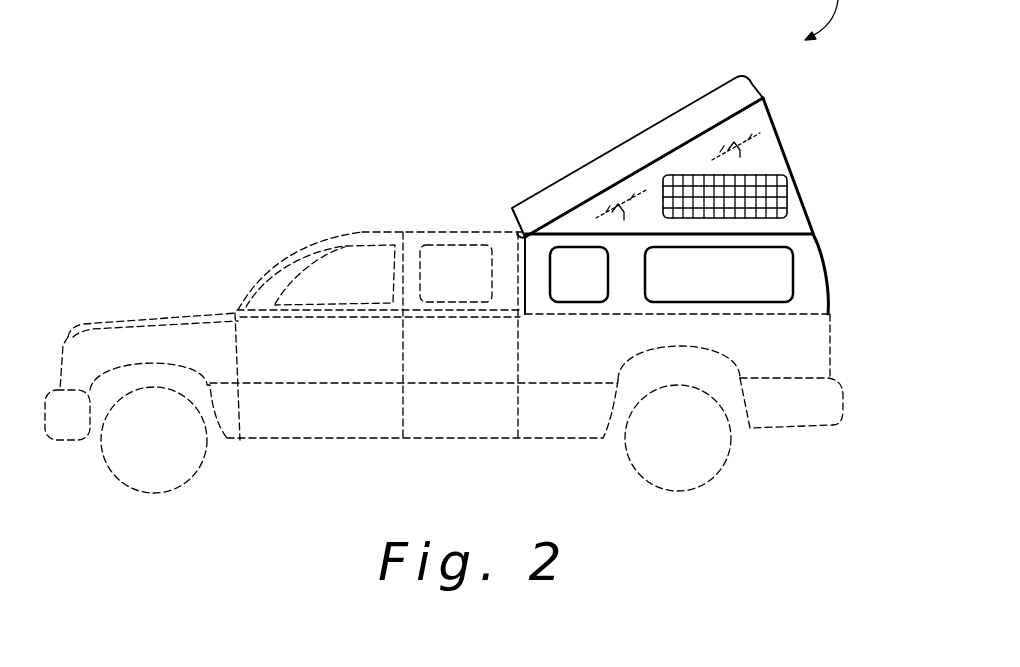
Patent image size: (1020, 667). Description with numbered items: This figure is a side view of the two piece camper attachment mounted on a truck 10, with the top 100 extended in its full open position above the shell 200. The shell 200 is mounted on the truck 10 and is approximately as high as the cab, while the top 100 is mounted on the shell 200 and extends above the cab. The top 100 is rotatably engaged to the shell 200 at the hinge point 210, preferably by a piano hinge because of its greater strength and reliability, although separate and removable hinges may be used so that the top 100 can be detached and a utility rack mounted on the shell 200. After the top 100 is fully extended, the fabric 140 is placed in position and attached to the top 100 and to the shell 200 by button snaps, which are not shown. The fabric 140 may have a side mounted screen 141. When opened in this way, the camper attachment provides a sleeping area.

The truck 10 is at (333, 368).
The top 100 is at (638, 153).
The fabric 140 is at (750, 143).
The side mounted screen 141 is at (785, 197).
The shell 200 is at (810, 283).
The hinge point 210 is at (517, 237).